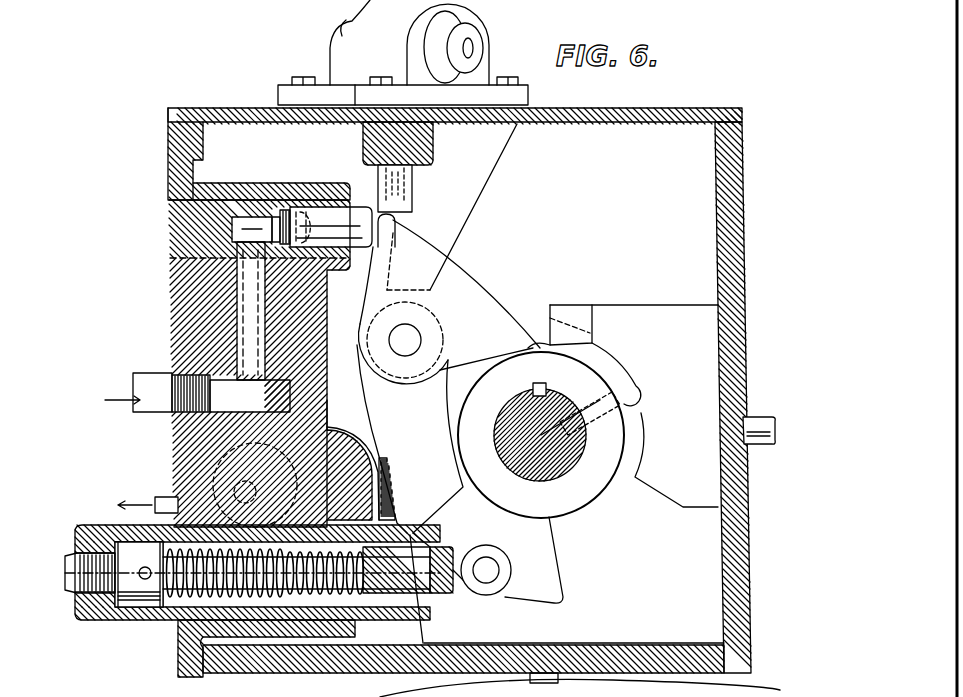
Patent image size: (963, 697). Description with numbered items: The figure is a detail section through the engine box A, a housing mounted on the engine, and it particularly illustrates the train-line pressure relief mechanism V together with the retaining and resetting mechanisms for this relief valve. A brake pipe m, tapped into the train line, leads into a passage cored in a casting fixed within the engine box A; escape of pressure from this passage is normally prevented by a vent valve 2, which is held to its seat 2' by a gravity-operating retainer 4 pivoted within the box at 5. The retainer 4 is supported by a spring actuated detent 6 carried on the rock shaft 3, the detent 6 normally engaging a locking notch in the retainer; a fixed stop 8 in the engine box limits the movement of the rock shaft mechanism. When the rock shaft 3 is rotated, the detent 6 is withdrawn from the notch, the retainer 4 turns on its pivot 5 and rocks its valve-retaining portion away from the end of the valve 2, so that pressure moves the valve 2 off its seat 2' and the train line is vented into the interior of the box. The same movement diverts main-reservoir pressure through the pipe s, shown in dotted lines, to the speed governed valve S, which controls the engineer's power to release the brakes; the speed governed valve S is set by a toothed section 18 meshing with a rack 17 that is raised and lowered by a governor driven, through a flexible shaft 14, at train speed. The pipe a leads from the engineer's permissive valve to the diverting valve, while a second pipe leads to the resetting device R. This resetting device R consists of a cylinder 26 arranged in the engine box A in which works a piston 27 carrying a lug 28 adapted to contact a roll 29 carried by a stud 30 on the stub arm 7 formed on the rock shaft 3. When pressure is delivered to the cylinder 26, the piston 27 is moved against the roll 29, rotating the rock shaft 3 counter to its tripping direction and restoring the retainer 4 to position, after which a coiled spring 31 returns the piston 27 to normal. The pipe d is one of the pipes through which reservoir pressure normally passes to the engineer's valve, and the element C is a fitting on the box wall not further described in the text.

The engine box A is at (745, 575).
The train-line pressure relief mechanism V is at (186, 222).
The brake pipe m is at (148, 386).
The vent valve 2 is at (331, 202).
The seat 2' is at (270, 200).
The gravity-operating retainer 4 is at (447, 282).
The pivot 5 is at (406, 340).
The fixed stop 8 is at (410, 494).
The pipe s is at (337, 404).
The toothed section 18 is at (372, 465).
The rack 17 is at (384, 484).
The speed governed valve S is at (172, 460).
The pipe a is at (165, 503).
The resetting device R is at (127, 620).
The piston 27 is at (138, 550).
The coiled spring 31 is at (188, 598).
The cylinder 26 is at (140, 621).
The lug 28 is at (445, 594).
The stub arm 7 is at (553, 537).
The rock shaft 3 is at (572, 466).
The detent 6 is at (622, 399).
The plug C is at (762, 422).
The roll 29 is at (503, 562).
The stud 30 is at (486, 576).
The pipe d is at (518, 680).
The flexible shaft 14 is at (472, 49).